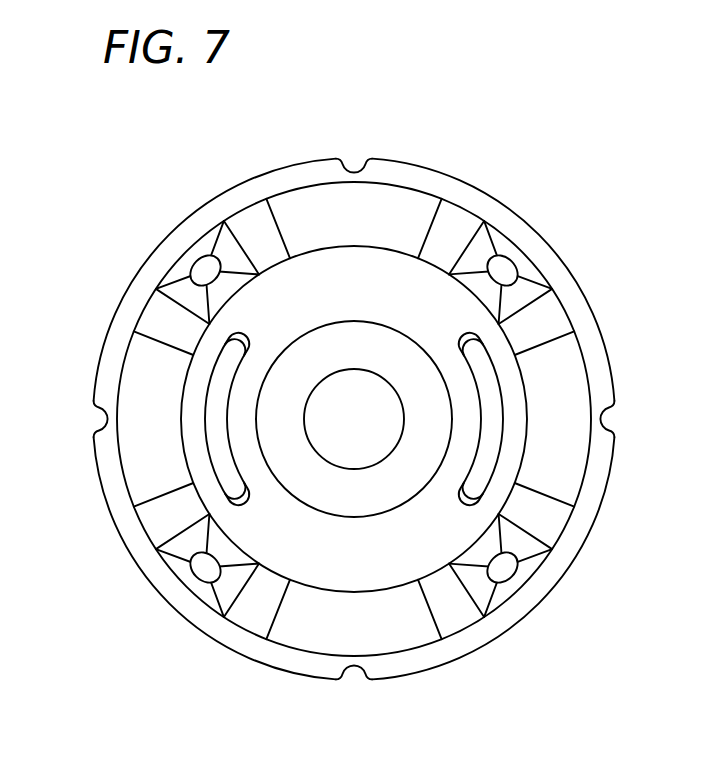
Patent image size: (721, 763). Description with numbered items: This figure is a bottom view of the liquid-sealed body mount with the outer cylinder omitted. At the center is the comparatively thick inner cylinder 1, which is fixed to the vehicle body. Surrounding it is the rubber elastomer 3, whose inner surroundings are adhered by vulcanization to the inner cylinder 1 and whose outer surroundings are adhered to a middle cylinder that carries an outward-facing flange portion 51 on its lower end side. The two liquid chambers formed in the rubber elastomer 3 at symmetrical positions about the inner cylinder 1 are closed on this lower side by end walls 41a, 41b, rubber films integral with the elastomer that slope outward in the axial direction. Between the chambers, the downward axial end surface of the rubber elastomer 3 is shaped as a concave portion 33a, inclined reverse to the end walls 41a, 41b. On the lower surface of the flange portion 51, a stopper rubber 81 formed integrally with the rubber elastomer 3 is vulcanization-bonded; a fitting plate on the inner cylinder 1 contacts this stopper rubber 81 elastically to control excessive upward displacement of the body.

The inner cylinder 1 is at (320, 352).
The rubber elastomer 3 is at (460, 440).
The concave portion 33a is at (488, 390).
The end wall 41a is at (380, 558).
The end wall 41b is at (317, 283).
The flange portion 51 is at (585, 310).
The stopper rubber 81 is at (405, 217).